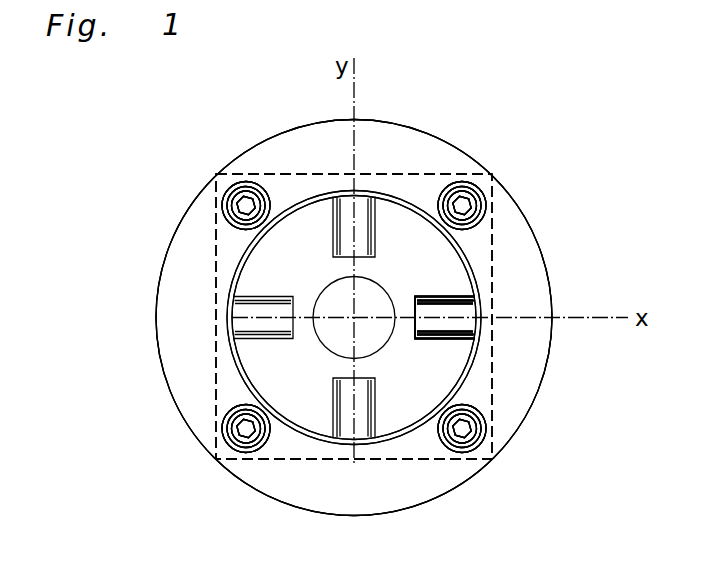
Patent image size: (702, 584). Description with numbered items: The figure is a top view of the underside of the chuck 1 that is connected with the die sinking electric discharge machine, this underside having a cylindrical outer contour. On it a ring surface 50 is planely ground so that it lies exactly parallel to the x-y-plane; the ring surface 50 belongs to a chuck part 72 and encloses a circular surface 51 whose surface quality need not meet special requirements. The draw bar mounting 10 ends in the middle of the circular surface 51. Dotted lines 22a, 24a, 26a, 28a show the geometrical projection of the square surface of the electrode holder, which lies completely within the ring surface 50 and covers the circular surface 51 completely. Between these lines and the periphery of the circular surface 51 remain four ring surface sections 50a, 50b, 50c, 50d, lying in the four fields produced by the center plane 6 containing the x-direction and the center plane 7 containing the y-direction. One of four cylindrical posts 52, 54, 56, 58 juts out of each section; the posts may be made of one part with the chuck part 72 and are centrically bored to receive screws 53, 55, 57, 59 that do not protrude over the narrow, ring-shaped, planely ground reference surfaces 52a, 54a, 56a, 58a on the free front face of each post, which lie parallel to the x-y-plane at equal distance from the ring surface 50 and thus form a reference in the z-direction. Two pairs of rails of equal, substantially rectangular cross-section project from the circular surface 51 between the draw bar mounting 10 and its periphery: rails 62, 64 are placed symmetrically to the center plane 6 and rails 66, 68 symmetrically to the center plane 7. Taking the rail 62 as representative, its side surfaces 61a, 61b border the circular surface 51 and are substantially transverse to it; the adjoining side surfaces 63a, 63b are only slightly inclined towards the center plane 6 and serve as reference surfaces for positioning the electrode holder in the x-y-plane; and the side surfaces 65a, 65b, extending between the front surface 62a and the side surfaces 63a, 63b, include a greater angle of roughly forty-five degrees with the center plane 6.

The chuck 1 is at (492, 152).
The center plane containing the x-direction 6 is at (618, 316).
The center plane containing the y-direction 7 is at (356, 110).
The draw bar mounting 10 is at (327, 342).
The dotted line 22a is at (443, 460).
The dotted line 24a is at (420, 173).
The dotted line 26a is at (493, 236).
The dotted line 28a is at (216, 250).
The ring surface 50 is at (518, 276).
The ring surface section 50a is at (476, 192).
The ring surface section 50b is at (479, 450).
The ring surface section 50c is at (228, 453).
The ring surface section 50d is at (229, 178).
The circular surface 51 is at (433, 263).
The post 52 is at (484, 418).
The reference surface 52a is at (466, 452).
The screw 53 is at (465, 183).
The post 54 is at (222, 428).
The reference surface 54a is at (245, 452).
The screw 55 is at (472, 431).
The post 56 is at (247, 181).
The reference surface 56a is at (228, 198).
The screw 57 is at (237, 434).
The post 58 is at (488, 198).
The reference surface 58a is at (484, 210).
The screw 59 is at (240, 206).
The side surface 61a is at (430, 297).
The side surface 61b is at (417, 338).
The rail 62 is at (462, 324).
The front surface 62a is at (412, 334).
The side surface 63a is at (447, 292).
The side surface 63b is at (437, 343).
The rail 64 is at (232, 318).
The side surface 65a is at (455, 299).
The side surface 65b is at (470, 327).
The rail 66 is at (358, 436).
The rail 68 is at (360, 200).
The chuck part 72 is at (532, 412).